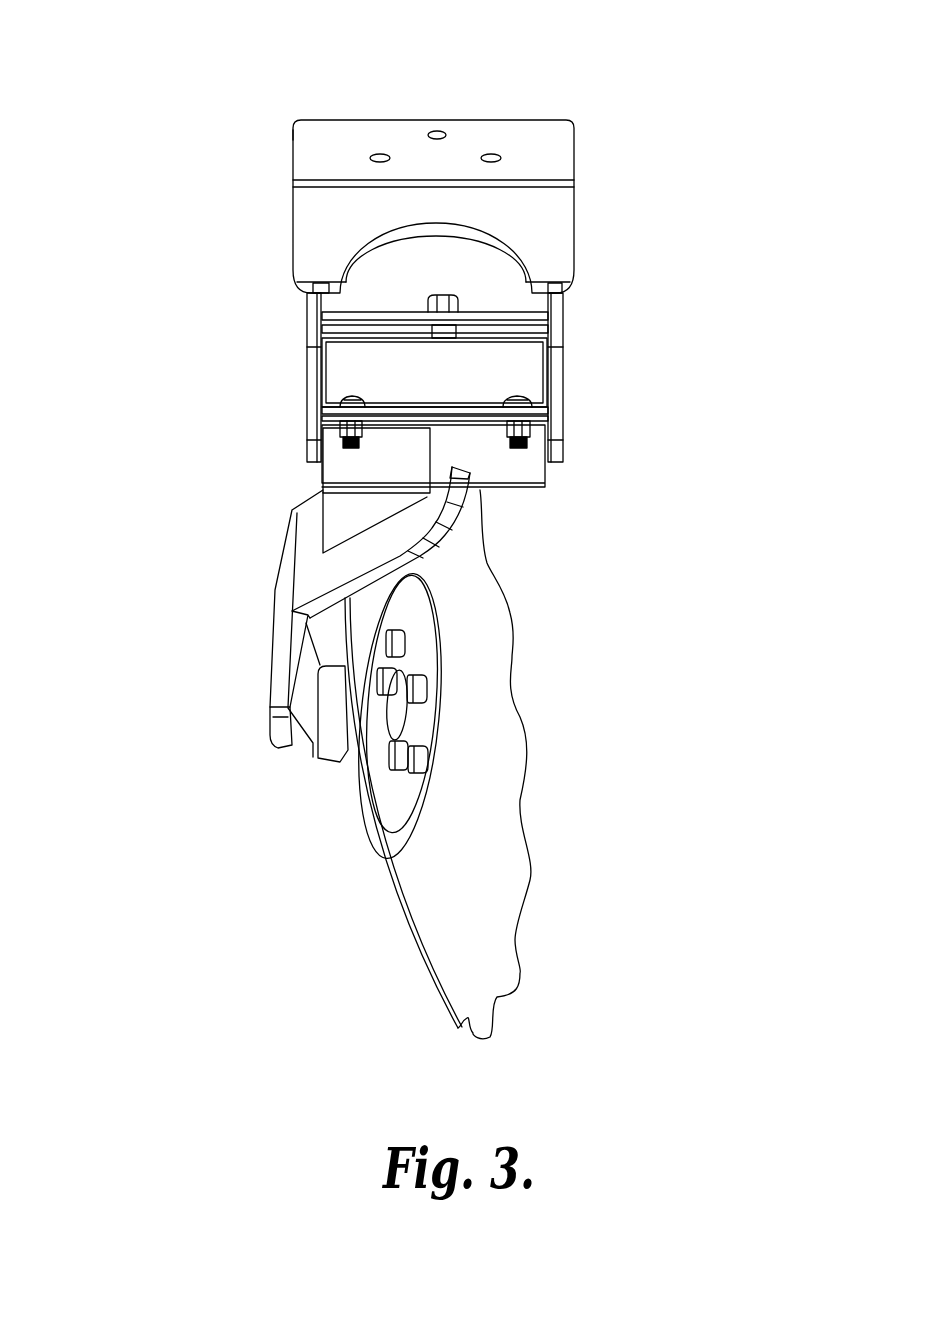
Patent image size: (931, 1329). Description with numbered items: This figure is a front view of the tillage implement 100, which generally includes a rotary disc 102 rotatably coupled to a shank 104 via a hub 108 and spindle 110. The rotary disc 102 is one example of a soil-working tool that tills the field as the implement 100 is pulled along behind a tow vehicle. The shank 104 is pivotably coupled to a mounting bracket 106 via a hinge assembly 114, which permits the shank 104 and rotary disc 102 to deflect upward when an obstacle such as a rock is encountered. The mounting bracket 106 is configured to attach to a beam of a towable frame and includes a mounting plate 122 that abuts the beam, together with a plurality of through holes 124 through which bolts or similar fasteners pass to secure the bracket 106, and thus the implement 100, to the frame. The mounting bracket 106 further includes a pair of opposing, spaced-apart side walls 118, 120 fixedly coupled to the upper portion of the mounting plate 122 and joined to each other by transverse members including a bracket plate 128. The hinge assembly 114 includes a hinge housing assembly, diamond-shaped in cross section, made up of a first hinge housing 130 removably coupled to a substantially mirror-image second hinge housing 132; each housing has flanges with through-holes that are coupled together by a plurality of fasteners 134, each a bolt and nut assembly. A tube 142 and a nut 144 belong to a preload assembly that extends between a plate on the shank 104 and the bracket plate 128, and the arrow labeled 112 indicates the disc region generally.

The tillage implement 100 is at (225, 72).
The rotary disc 102 is at (505, 850).
The shank 104 is at (280, 610).
The mounting bracket 106 is at (540, 132).
The hub 108 is at (330, 722).
The spindle 110 is at (268, 727).
The hub flange 112 is at (468, 690).
The hinge assembly 114 is at (606, 443).
The side wall 118 is at (312, 335).
The side wall 120 is at (555, 358).
The mounting plate 122 is at (316, 126).
The through holes 124 is at (491, 155).
The bracket plate 128 is at (530, 317).
The first hinge housing 130 is at (422, 370).
The second hinge housing 132 is at (485, 462).
The fasteners 134 is at (348, 398).
The tube 142 is at (438, 332).
The nut 144 is at (448, 300).